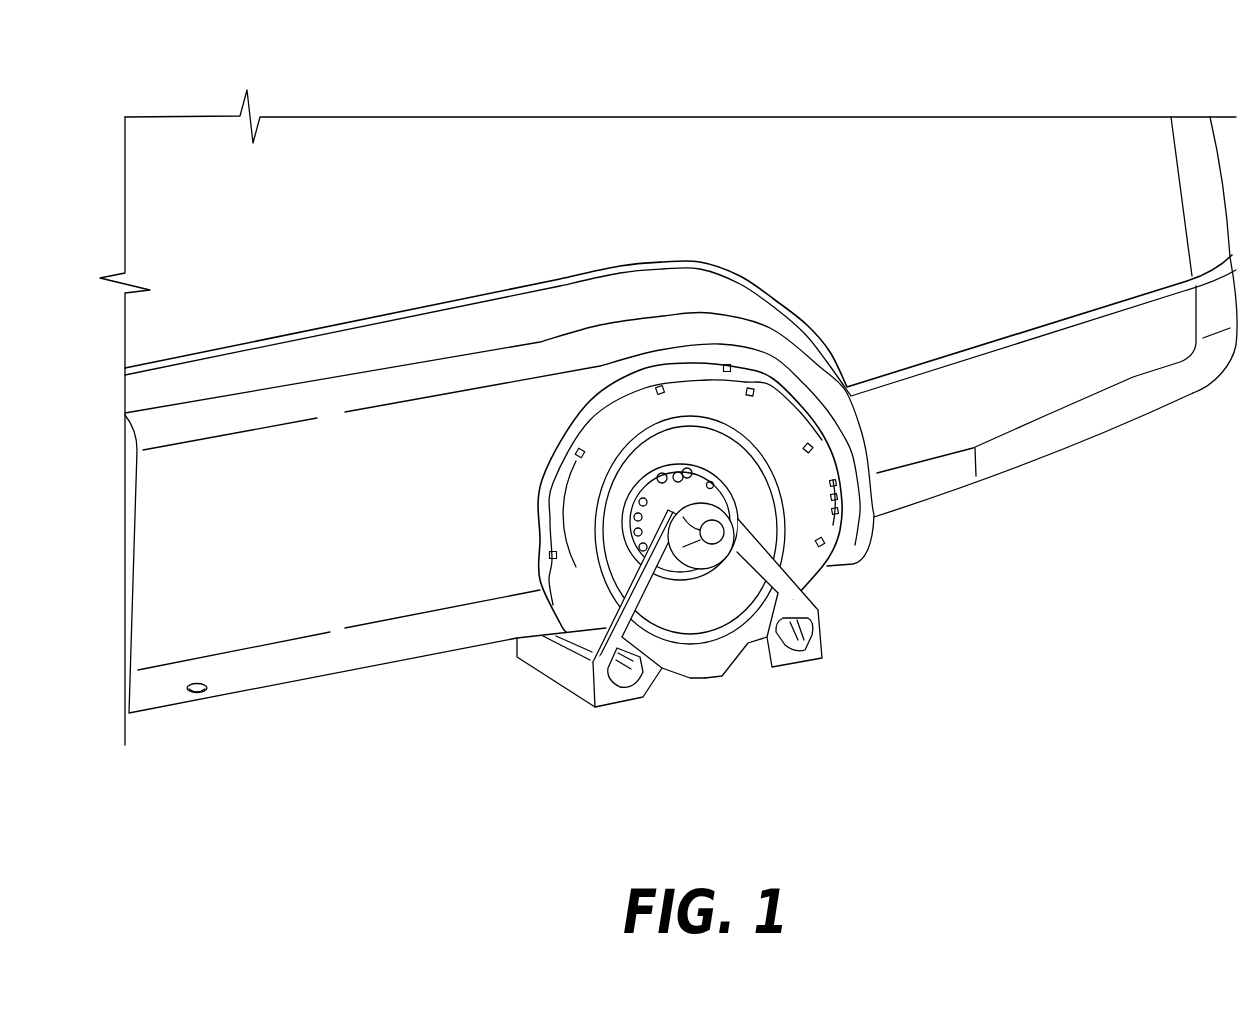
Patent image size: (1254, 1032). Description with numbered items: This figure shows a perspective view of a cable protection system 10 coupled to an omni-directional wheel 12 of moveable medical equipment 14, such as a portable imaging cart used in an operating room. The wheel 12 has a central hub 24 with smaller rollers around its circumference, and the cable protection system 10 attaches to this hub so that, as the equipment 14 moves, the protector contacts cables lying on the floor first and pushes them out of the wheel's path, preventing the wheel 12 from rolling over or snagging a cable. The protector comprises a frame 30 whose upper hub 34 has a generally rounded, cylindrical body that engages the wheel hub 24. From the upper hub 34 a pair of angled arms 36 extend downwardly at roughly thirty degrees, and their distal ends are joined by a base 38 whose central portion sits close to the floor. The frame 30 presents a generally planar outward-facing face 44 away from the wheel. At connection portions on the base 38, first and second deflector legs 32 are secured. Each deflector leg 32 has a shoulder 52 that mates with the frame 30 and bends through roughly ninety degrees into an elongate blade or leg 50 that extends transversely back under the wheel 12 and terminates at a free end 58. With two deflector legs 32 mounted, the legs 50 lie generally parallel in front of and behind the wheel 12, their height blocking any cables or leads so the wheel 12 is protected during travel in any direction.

The cable protection system 10 is at (674, 478).
The wheel 12 is at (873, 512).
The moveable medical equipment 14 is at (1020, 137).
The central hub 24 is at (627, 432).
The frame 30 is at (674, 549).
The deflector leg 32 is at (825, 659).
The upper hub 34 is at (695, 528).
The angled arm 36 is at (753, 545).
The base 38 is at (690, 677).
The outward-facing face 44 is at (668, 665).
The leg 50 is at (565, 680).
The shoulder 52 is at (819, 613).
The free end 58 is at (536, 701).